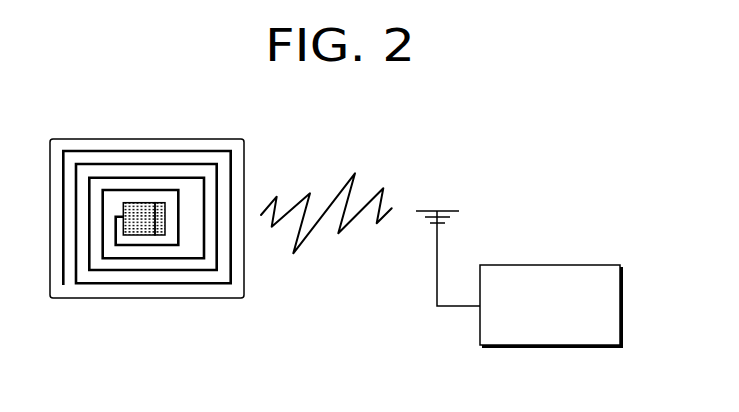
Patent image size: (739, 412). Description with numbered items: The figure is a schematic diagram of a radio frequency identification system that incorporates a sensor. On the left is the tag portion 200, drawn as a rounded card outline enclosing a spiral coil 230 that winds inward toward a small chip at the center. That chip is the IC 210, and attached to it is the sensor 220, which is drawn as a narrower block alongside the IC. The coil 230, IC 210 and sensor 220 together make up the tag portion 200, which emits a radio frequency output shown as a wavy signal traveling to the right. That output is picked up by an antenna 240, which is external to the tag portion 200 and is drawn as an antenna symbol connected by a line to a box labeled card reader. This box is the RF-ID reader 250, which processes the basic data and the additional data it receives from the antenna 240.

The tag portion 200 is at (210, 139).
The IC 210 is at (134, 203).
The sensor 220 is at (157, 203).
The coil 230 is at (80, 151).
The antenna 240 is at (437, 211).
The RF-ID reader 250 is at (551, 265).